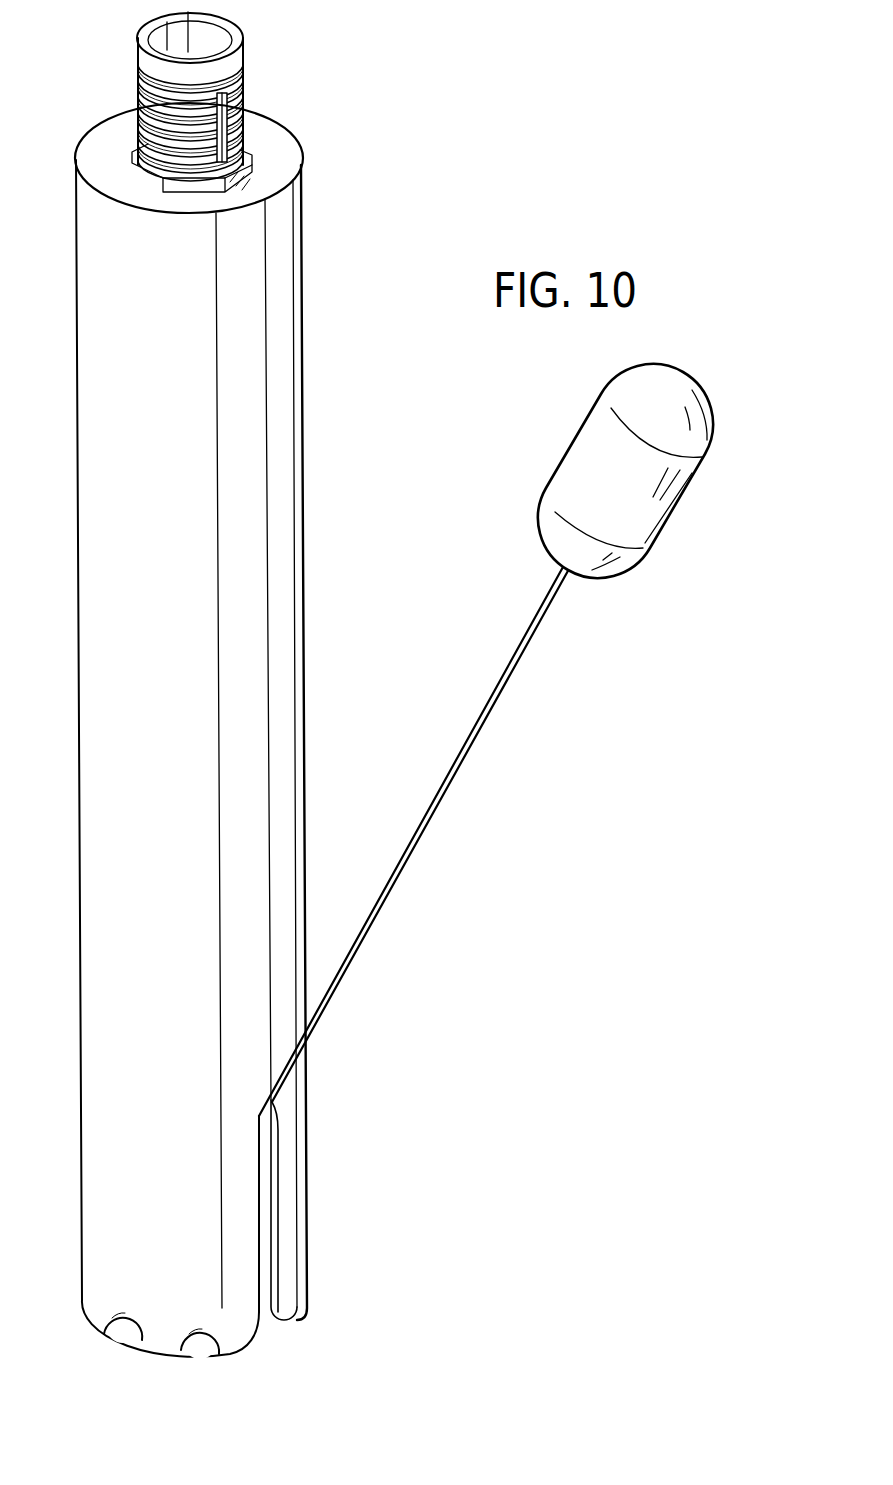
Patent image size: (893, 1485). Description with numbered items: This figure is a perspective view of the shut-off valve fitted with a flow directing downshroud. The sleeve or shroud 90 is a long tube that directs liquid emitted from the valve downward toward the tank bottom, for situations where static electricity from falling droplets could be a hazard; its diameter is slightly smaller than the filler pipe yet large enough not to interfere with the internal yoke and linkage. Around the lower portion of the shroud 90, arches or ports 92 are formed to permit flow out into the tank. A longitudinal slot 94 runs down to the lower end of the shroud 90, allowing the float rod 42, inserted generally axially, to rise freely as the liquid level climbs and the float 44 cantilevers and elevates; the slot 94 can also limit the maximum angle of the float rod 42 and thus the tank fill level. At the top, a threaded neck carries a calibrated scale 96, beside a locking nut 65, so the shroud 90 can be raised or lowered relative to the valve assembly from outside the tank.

The float rod 42 is at (466, 772).
The float 44 is at (690, 490).
The locking nut 65 is at (258, 138).
The shroud 90 is at (305, 641).
The ports 92 is at (122, 1324).
The longitudinal slot 94 is at (274, 1223).
The calibrated scale 96 is at (242, 103).